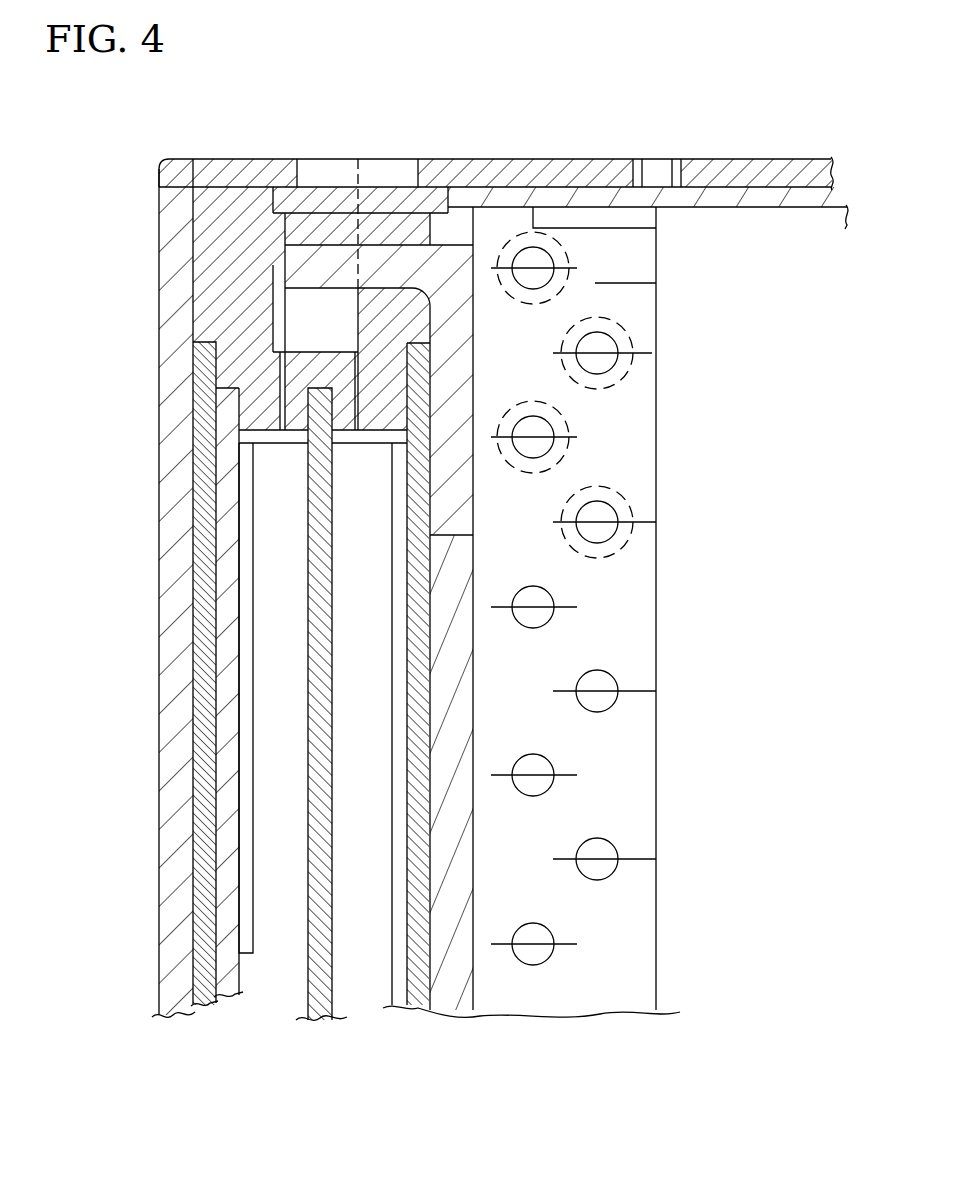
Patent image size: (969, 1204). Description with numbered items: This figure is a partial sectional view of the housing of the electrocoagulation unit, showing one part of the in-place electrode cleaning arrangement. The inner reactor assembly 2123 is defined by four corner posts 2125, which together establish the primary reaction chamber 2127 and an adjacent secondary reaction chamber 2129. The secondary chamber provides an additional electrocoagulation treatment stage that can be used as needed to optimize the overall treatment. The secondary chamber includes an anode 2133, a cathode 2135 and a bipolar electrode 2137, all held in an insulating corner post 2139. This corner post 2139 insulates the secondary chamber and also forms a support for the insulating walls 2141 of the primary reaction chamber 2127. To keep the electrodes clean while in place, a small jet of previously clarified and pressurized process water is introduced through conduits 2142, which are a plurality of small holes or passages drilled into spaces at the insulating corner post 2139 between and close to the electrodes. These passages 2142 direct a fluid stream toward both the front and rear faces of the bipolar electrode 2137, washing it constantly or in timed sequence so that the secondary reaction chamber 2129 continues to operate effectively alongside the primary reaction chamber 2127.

The inner reactor assembly 2123 is at (797, 160).
The corner posts 2125 is at (158, 506).
The primary reaction chamber 2127 is at (735, 679).
The secondary reaction chamber 2129 is at (190, 622).
The anode 2133 is at (232, 873).
The cathode 2135 is at (410, 778).
The bipolar electrode 2137 is at (305, 782).
The corner post 2139 is at (200, 317).
The insulating walls 2141 is at (772, 207).
The conduits 2142 is at (280, 445).